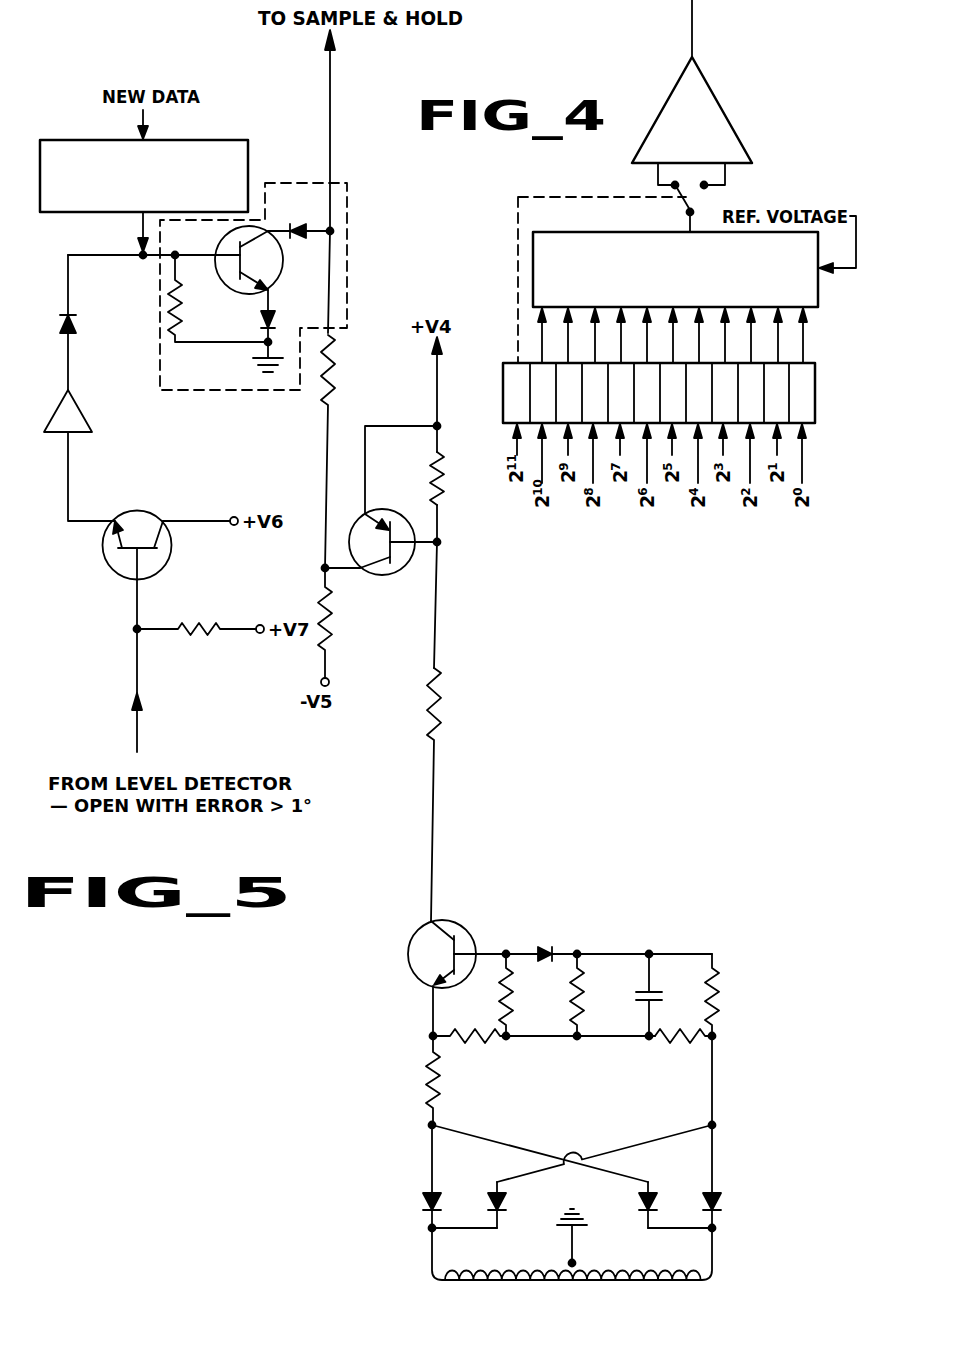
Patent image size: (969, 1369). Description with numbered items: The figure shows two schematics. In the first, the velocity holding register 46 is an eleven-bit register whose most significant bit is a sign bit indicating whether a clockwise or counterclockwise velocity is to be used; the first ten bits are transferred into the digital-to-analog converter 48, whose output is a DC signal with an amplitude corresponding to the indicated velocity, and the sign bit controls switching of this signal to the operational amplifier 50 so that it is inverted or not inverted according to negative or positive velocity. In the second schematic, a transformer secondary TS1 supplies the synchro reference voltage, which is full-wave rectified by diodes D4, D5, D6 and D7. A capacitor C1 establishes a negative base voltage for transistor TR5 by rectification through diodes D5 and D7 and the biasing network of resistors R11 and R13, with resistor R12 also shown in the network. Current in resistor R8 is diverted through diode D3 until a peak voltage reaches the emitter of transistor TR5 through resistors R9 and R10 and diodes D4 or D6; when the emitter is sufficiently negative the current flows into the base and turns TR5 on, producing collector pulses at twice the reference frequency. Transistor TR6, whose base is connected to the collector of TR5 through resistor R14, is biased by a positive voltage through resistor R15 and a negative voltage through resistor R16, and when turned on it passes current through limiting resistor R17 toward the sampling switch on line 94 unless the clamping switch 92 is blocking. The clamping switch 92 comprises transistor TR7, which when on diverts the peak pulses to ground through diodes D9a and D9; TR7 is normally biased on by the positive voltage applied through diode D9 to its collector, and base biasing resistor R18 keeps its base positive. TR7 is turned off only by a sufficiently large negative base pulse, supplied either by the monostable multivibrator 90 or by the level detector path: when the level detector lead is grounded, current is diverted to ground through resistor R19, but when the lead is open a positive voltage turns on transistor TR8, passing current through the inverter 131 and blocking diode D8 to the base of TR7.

In FIG. 4, the velocity holding register 46 is at (816, 364).
In FIG. 4, the digital-to-analog converter 48 is at (568, 236).
In FIG. 4, the operational amplifier 50 is at (714, 95).
In FIG. 5, the monostable multivibrator 90 is at (212, 141).
In FIG. 5, the clamping switch 92 is at (284, 286).
In FIG. 5, the line 94 is at (332, 160).
In FIG. 5, the inverter 131 is at (86, 412).
In FIG. 5, the transistor TR5 is at (457, 922).
In FIG. 5, the second transistor TR6 is at (404, 573).
In FIG. 5, the transistor TR7 is at (272, 273).
In FIG. 5, the transistor TR8 is at (138, 510).
In FIG. 5, the diode D3 is at (546, 946).
In FIG. 5, the diode D4 is at (422, 1198).
In FIG. 5, the diode D5 is at (506, 1198).
In FIG. 5, the diode D6 is at (639, 1198).
In FIG. 5, the diode D7 is at (721, 1198).
In FIG. 5, the blocking diode D8 is at (80, 323).
In FIG. 5, the diode D9 is at (297, 225).
In FIG. 5, the diode D9a is at (260, 320).
In FIG. 5, the resistor R8 is at (500, 1006).
In FIG. 5, the resistor R9 is at (460, 1044).
In FIG. 5, the resistor R10 is at (429, 1070).
In FIG. 5, the resistor R11 is at (571, 997).
In FIG. 5, the resistor R12 is at (684, 1042).
In FIG. 5, the resistor R13 is at (722, 1000).
In FIG. 5, the resistor R14 is at (430, 700).
In FIG. 5, the resistor R15 is at (431, 469).
In FIG. 5, the resistor R16 is at (330, 640).
In FIG. 5, the limiting resistor R17 is at (334, 400).
In FIG. 5, the base biasing resistor R18 is at (182, 286).
In FIG. 5, the resistor R19 is at (218, 622).
In FIG. 5, the capacitor C1 is at (640, 990).
In FIG. 5, the transformer secondary TS1 is at (712, 1276).